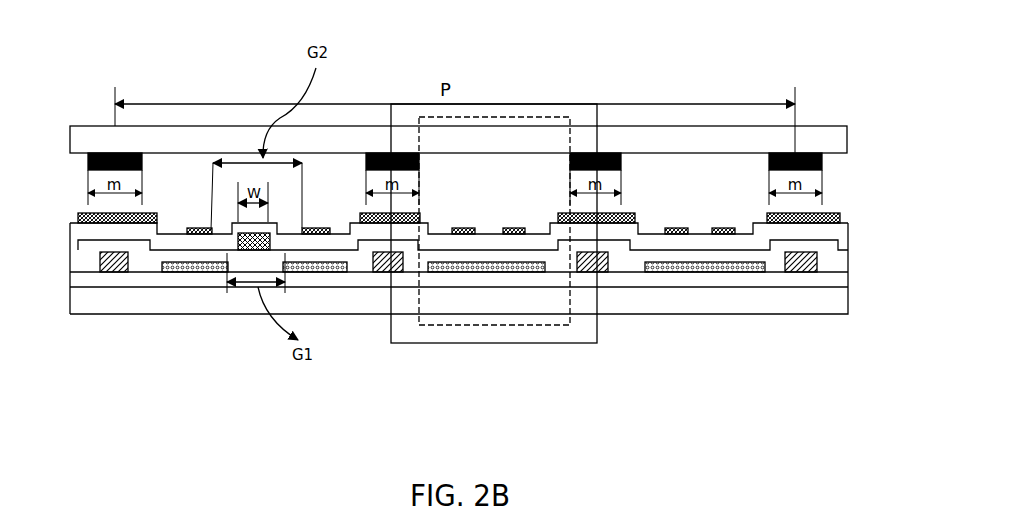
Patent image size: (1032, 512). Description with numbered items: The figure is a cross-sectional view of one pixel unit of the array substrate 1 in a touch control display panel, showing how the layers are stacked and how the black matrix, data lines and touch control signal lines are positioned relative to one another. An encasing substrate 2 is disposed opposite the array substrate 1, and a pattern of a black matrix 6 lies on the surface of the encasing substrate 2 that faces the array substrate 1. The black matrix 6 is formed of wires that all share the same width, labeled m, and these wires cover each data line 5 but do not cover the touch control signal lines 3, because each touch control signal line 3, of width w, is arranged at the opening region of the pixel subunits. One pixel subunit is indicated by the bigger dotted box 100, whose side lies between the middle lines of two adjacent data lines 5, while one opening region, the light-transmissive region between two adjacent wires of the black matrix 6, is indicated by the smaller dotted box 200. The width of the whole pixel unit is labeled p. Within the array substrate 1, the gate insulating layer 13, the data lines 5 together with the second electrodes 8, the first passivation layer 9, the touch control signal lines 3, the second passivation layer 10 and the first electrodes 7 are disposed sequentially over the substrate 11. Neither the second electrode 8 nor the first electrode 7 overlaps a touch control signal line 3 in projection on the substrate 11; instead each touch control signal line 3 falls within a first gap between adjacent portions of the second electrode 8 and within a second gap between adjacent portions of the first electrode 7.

The array substrate 1 is at (68, 257).
The encasing substrate 2 is at (82, 125).
The touch control signal line 3 is at (252, 252).
The data line 5 is at (392, 258).
The black matrix 6 is at (822, 153).
The first electrode 7 is at (200, 228).
The second electrode 8 is at (193, 265).
The first passivation layer 9 is at (830, 262).
The second passivation layer 10 is at (825, 232).
The substrate 11 is at (808, 302).
The gate insulating layer 13 is at (833, 279).
The pixel subunit box 100 is at (435, 343).
The opening region box 200 is at (510, 325).